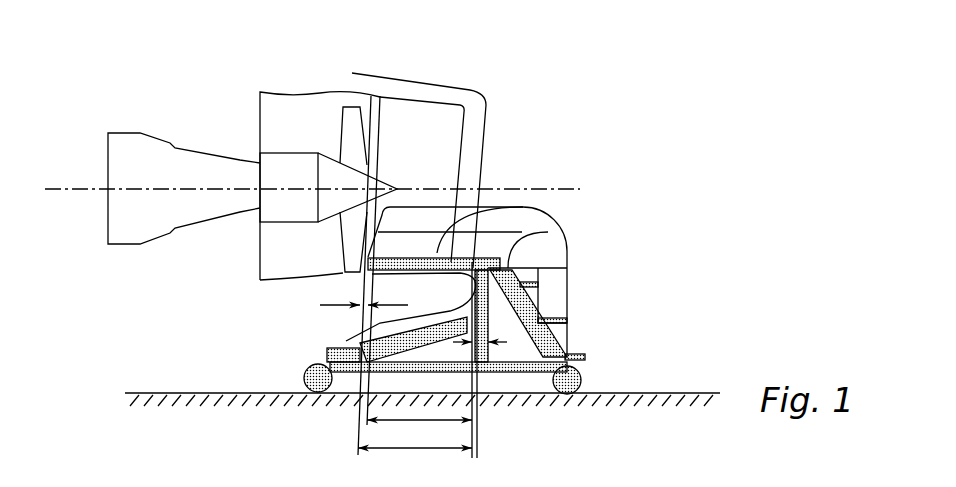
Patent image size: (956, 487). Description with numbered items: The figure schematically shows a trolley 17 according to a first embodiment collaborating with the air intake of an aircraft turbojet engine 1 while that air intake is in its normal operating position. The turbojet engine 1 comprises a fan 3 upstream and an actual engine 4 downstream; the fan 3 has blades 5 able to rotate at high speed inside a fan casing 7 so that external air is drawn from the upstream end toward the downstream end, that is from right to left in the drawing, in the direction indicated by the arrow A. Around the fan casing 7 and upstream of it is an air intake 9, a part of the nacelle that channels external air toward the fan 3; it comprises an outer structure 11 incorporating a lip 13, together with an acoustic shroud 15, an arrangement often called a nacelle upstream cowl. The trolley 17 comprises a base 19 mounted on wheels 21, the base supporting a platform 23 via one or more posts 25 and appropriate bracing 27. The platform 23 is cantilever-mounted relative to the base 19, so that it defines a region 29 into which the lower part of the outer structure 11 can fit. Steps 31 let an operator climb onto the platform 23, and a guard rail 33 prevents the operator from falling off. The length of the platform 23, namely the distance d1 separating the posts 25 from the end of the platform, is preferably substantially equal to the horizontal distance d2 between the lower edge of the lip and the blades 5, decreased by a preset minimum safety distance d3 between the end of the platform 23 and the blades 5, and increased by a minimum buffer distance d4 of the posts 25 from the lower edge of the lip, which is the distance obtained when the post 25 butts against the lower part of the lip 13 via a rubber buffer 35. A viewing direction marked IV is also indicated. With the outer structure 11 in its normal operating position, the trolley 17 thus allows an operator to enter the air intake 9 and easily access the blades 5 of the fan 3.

The aircraft turbojet engine 1 is at (199, 99).
The fan 3 is at (304, 244).
The actual engine 4 is at (143, 228).
The blades 5 is at (348, 130).
The fan casing 7 is at (265, 90).
The air intake 9 is at (450, 69).
The outer structure 11 is at (475, 83).
The lip 13 is at (478, 128).
The acoustic shroud 15 is at (424, 107).
The trolley 17 is at (615, 290).
The base 19 is at (517, 368).
The wheels 21 is at (583, 383).
The platform 23 is at (520, 207).
The post 25 is at (480, 328).
The bracing 27 is at (345, 342).
The region 29 is at (407, 321).
The steps 31 is at (584, 357).
The guard rail 33 is at (567, 258).
The rubber buffer 35 is at (560, 235).
The arrow A is at (505, 127).
The viewing direction IV is at (630, 146).
The distance d1 is at (398, 429).
The horizontal distance d2 is at (412, 456).
The minimum safety distance d3 is at (367, 305).
The minimum buffer distance d4 is at (474, 354).